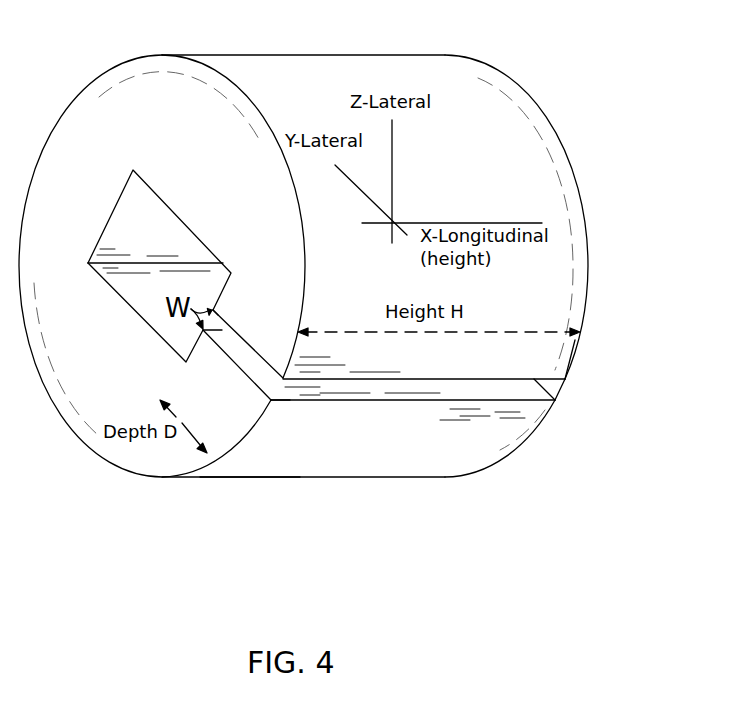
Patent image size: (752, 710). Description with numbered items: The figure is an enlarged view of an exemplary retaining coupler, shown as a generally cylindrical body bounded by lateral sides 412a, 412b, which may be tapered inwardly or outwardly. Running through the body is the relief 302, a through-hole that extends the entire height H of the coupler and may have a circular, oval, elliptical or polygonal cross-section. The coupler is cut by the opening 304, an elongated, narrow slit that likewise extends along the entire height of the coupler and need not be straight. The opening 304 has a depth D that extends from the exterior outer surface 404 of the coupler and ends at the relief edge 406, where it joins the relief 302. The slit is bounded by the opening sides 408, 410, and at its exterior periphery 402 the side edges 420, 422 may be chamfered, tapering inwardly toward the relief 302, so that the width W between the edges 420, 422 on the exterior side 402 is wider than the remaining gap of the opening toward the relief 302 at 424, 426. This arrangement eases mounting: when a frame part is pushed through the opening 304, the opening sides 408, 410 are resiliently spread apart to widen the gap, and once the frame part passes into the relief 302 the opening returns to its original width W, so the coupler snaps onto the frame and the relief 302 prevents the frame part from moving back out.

The relief 302 is at (167, 237).
The opening 304 is at (572, 395).
The exterior periphery 402 is at (388, 408).
The exterior outer surface 404 is at (265, 478).
The relief edge 406 is at (128, 306).
The opening side 408 is at (257, 357).
The opening side 410 is at (246, 382).
The lateral side 412a is at (134, 161).
The lateral side 412b is at (566, 128).
The side edge 420 is at (257, 410).
The side edge 422 is at (556, 366).
The remaining gap of the opening 424 is at (222, 305).
The remaining gap of the opening 426 is at (203, 340).